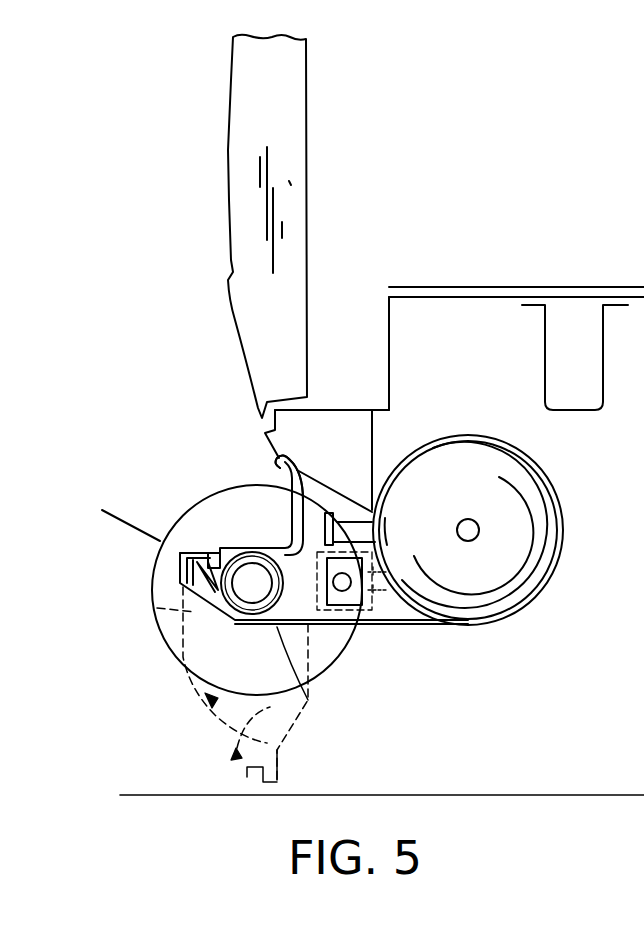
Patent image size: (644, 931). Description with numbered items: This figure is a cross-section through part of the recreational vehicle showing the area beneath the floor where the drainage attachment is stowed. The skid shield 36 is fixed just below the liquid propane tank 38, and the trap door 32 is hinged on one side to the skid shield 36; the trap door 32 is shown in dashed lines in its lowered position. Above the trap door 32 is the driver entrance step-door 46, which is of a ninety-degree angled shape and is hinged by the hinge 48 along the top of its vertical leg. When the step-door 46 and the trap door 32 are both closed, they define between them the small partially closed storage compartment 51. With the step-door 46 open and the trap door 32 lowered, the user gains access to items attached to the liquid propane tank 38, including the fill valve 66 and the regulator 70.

The trap door 32 is at (308, 700).
The skid shield 36 is at (411, 626).
The liquid propane tank 38 is at (563, 511).
The driver entrance step-door 46 is at (233, 491).
The hinge 48 is at (272, 456).
The storage compartment 51 is at (230, 620).
The fill valve 66 is at (326, 512).
The regulator 70 is at (339, 606).